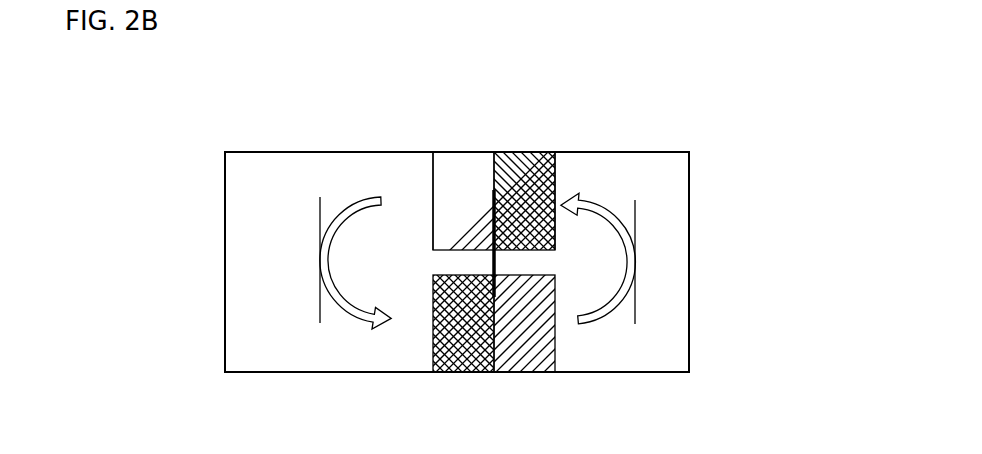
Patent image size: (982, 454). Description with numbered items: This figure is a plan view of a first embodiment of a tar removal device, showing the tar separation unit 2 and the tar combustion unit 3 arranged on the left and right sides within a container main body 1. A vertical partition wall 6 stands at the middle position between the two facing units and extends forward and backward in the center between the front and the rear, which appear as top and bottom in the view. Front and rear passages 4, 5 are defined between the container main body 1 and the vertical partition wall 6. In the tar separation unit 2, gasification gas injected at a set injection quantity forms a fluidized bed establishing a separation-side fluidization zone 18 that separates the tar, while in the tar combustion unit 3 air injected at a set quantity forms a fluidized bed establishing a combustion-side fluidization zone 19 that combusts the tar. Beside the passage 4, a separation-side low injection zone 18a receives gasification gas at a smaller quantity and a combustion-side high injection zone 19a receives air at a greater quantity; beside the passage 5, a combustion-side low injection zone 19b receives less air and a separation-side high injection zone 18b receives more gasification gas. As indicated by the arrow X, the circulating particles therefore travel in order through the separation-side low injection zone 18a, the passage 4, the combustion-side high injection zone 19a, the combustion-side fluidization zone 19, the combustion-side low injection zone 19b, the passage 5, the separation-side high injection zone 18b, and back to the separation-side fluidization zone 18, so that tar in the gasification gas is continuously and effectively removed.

The container main body 1 is at (315, 152).
The tar separation unit 2 is at (268, 249).
The tar combustion unit 3 is at (662, 247).
The passage 4 is at (497, 322).
The passage 5 is at (487, 187).
The vertical partition wall 6 is at (507, 190).
The separation-side fluidization zone 18 is at (280, 307).
The combustion-side fluidization zone 19 is at (680, 305).
The separation-side low injection zone 18a is at (433, 372).
The separation-side high injection zone 18b is at (445, 178).
The combustion-side high injection zone 19a is at (533, 338).
The combustion-side low injection zone 19b is at (553, 153).
The arrow X is at (617, 222).